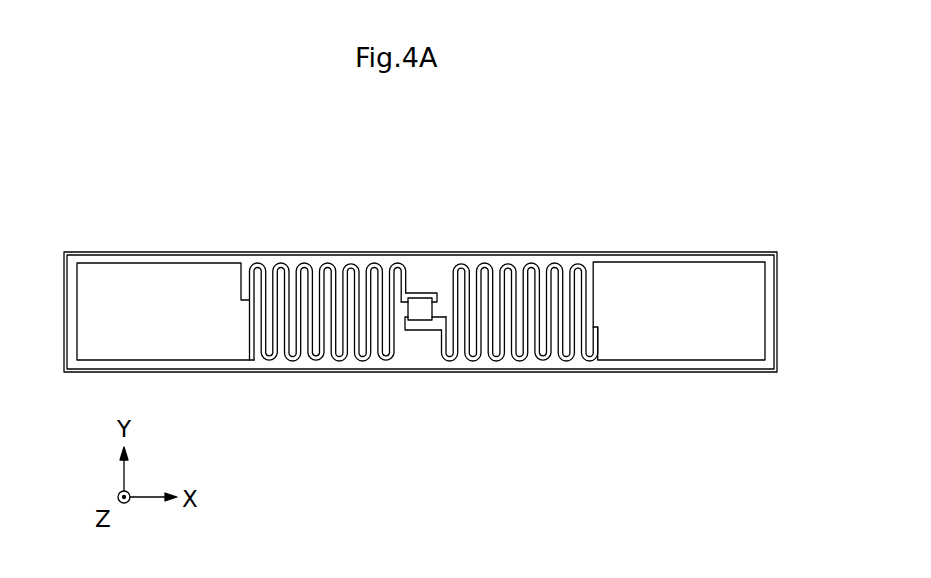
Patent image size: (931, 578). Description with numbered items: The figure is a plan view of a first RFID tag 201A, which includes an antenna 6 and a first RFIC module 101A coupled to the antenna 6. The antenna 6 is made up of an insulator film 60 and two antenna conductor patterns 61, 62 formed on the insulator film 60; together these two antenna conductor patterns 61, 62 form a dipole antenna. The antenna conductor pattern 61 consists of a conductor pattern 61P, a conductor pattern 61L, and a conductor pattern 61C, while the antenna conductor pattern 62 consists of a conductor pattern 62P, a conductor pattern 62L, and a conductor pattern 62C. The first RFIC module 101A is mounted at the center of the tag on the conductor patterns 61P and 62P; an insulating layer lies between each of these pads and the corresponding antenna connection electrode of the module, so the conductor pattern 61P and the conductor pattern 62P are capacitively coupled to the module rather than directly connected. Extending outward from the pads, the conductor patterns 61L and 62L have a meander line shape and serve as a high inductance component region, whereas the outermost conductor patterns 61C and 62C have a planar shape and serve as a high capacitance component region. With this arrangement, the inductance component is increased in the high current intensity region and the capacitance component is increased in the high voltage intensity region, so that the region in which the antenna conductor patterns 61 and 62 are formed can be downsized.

The antenna 6 is at (744, 208).
The insulator film 60 is at (777, 304).
The first RFID tag 201A is at (187, 114).
The antenna conductor pattern 62 is at (438, 193).
The conductor pattern 62C is at (155, 278).
The conductor pattern 62L is at (325, 268).
The conductor pattern 62P is at (417, 293).
The first RFIC module 101A is at (426, 305).
The antenna conductor pattern 61 is at (710, 432).
The conductor pattern 61P is at (425, 330).
The conductor pattern 61L is at (517, 361).
The conductor pattern 61C is at (687, 348).